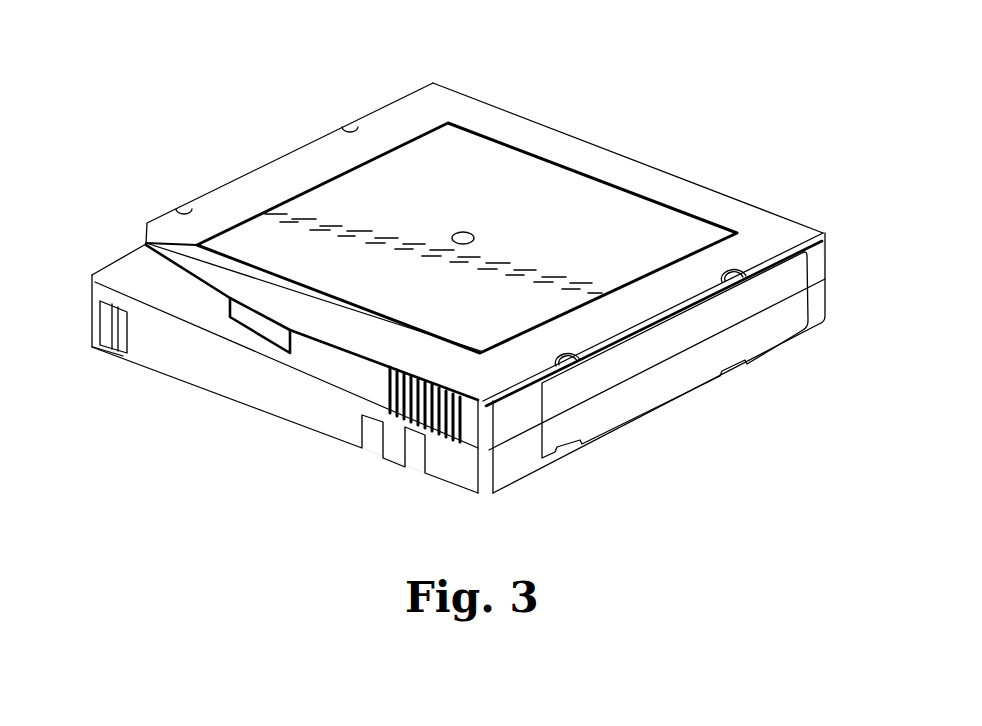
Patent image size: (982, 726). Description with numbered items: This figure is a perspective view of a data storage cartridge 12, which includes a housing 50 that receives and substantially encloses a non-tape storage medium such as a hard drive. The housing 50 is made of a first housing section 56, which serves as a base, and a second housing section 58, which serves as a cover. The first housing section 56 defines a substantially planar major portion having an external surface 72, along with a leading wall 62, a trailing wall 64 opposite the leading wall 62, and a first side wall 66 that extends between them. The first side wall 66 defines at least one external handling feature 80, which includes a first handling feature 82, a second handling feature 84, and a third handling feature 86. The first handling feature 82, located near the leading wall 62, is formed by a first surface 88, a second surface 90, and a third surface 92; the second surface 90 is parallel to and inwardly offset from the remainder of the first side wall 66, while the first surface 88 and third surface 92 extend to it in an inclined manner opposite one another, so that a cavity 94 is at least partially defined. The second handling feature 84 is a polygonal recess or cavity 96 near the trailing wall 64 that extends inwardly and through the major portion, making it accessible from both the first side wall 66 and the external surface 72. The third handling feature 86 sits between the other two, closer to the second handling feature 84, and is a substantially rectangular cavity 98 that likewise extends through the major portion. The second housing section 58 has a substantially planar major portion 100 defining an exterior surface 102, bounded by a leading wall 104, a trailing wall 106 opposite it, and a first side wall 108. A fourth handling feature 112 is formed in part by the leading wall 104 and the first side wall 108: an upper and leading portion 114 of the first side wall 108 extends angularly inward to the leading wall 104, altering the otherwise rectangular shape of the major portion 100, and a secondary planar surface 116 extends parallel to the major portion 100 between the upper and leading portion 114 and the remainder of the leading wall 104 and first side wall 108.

The data storage cartridge 12 is at (451, 281).
The housing 50 is at (451, 301).
The first housing section 56 is at (455, 391).
The second housing section 58 is at (834, 247).
The leading wall 62 is at (88, 338).
The trailing wall 64 is at (677, 377).
The first side wall 66 is at (290, 412).
The external surface 72 is at (542, 467).
The external handling feature 80 is at (381, 473).
The first handling feature 82 is at (112, 364).
The second handling feature 84 is at (409, 462).
The third handling feature 86 is at (373, 445).
The first surface 88 is at (100, 329).
The second surface 90 is at (102, 307).
The third surface 92 is at (128, 333).
The cavity 94 is at (95, 354).
The cavity 96 is at (420, 466).
The cavity 98 is at (372, 456).
The major portion 100 is at (644, 172).
The exterior surface 102 is at (487, 118).
The leading wall 104 is at (228, 183).
The trailing wall 106 is at (618, 370).
The first side wall 108 is at (250, 352).
The fourth handling feature 112 is at (128, 263).
The upper and leading portion 114 is at (133, 266).
The secondary planar surface 116 is at (103, 273).